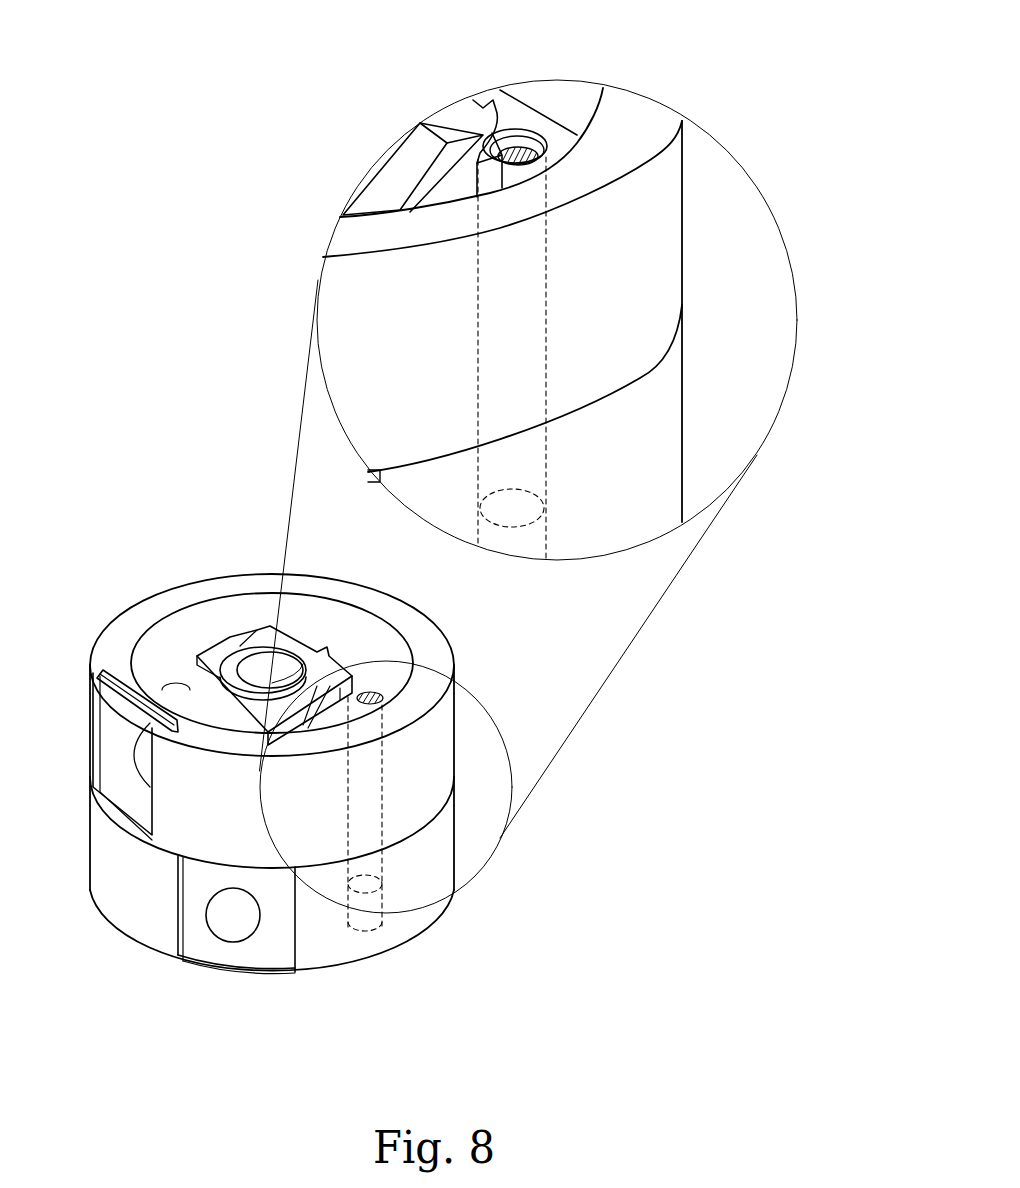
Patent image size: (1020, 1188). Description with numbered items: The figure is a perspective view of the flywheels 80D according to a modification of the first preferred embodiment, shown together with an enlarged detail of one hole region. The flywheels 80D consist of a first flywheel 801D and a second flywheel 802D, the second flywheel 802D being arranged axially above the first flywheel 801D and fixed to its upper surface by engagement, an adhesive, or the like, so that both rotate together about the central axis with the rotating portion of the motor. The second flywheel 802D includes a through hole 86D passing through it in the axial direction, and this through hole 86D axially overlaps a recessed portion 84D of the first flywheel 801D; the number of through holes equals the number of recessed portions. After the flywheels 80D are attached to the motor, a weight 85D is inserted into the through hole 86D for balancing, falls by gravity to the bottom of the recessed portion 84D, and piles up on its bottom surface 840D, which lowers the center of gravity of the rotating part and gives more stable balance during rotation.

The flywheels 80D is at (328, 760).
The first flywheel 801D is at (467, 945).
The second flywheel 802D is at (162, 567).
The bottom surface 840D is at (363, 933).
The recessed portion 84D is at (527, 542).
The weight 85D is at (517, 150).
The through hole 86D is at (517, 302).